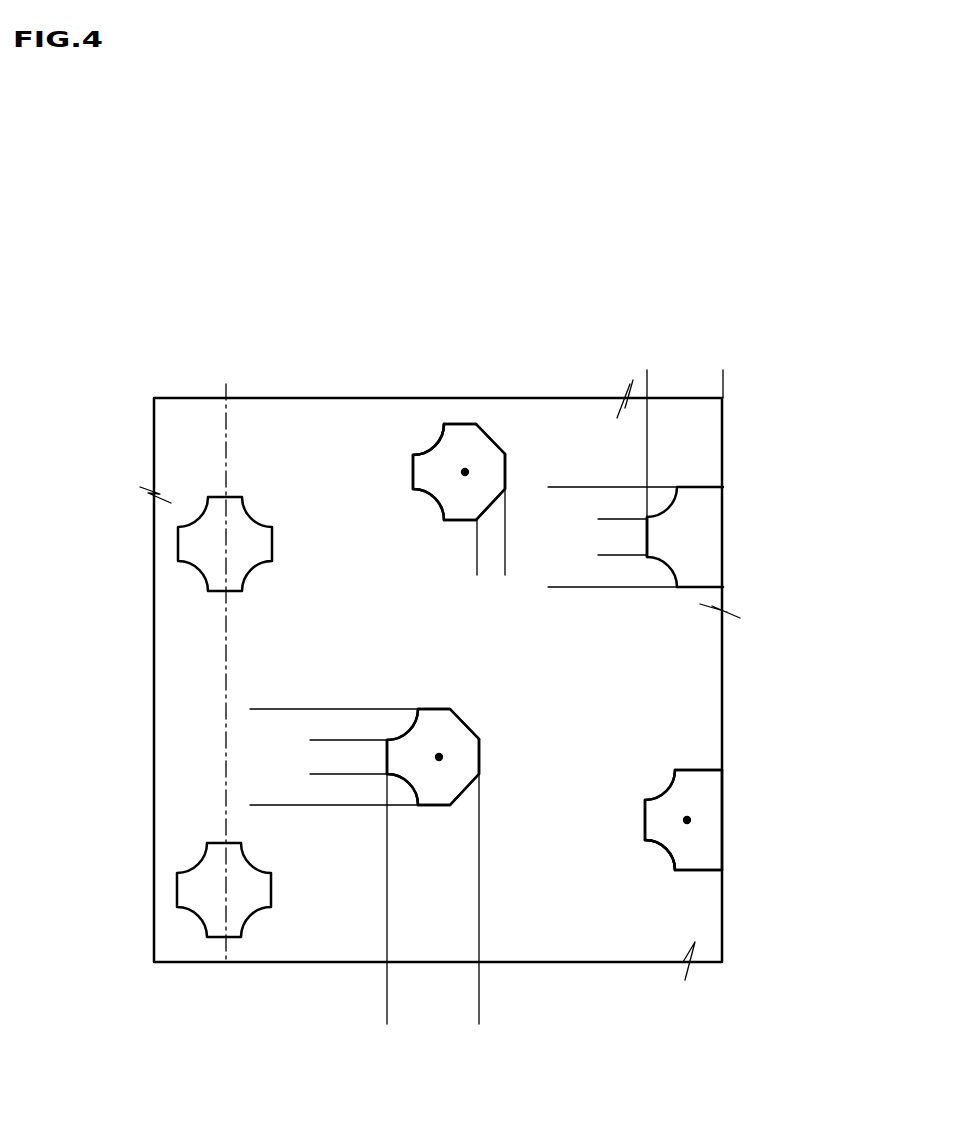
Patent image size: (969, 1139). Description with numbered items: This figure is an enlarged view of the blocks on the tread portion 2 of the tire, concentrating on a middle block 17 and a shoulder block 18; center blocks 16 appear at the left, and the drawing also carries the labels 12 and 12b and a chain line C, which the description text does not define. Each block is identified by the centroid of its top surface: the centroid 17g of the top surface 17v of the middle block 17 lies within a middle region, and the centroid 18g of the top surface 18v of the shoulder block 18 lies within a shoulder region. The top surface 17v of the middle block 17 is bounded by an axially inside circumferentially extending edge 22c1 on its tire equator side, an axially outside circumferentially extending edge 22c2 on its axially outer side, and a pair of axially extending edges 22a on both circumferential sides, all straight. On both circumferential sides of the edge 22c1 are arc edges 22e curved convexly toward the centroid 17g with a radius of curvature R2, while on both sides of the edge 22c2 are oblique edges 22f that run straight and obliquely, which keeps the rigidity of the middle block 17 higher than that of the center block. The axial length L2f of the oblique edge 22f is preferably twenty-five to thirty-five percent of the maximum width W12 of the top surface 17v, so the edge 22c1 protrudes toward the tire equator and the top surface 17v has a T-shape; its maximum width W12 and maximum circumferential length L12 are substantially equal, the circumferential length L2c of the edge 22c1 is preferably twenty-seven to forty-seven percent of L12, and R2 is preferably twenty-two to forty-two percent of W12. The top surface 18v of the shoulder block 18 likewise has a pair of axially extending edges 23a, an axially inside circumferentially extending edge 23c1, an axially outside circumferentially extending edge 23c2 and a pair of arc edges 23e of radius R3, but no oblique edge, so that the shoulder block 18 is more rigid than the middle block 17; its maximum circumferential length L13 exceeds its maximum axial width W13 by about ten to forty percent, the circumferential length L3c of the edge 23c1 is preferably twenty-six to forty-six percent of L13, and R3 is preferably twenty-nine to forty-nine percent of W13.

The tread portion 2 is at (387, 645).
The plate body 12 is at (387, 678).
The plate surface 12b is at (192, 470).
The center line C is at (224, 660).
The center block 16 is at (207, 552).
The middle block 17 is at (388, 683).
The top surface of middle block 17v is at (435, 468).
The centroid of middle block top surface 17g is at (466, 470).
The shoulder block 18 is at (756, 678).
The top surface of shoulder block 18v is at (690, 546).
The centroid of shoulder block top surface 18g is at (690, 819).
The axially extending edge 22a is at (470, 520).
The axially inside circumferentially extending edge 22c1 is at (413, 480).
The axially outside circumferentially extending edge 22c2 is at (505, 485).
The arc edge 22e is at (445, 424).
The oblique edge 22f is at (505, 453).
The axially extending edge 23a is at (700, 770).
The axially inside circumferentially extending edge 23c1 is at (646, 535).
The axially outside circumferentially extending edge 23c2 is at (723, 788).
The arc edge 23e is at (660, 790).
The radius of curvature of arc edge 22e R2 is at (432, 447).
The radius of curvature of arc edge 23e R3 is at (658, 845).
The maximum circumferential length of middle block top surface L12 is at (256, 709).
The circumferential length of edge 22c1 L2c is at (317, 709).
The maximum axial width of middle block top surface W12 is at (479, 1018).
The axial length of oblique edge L2f is at (535, 568).
The maximum circumferential length of shoulder block top surface L13 is at (553, 487).
The circumferential length of edge 23c1 L3c is at (607, 487).
The maximum axial width of shoulder block top surface W13 is at (647, 375).